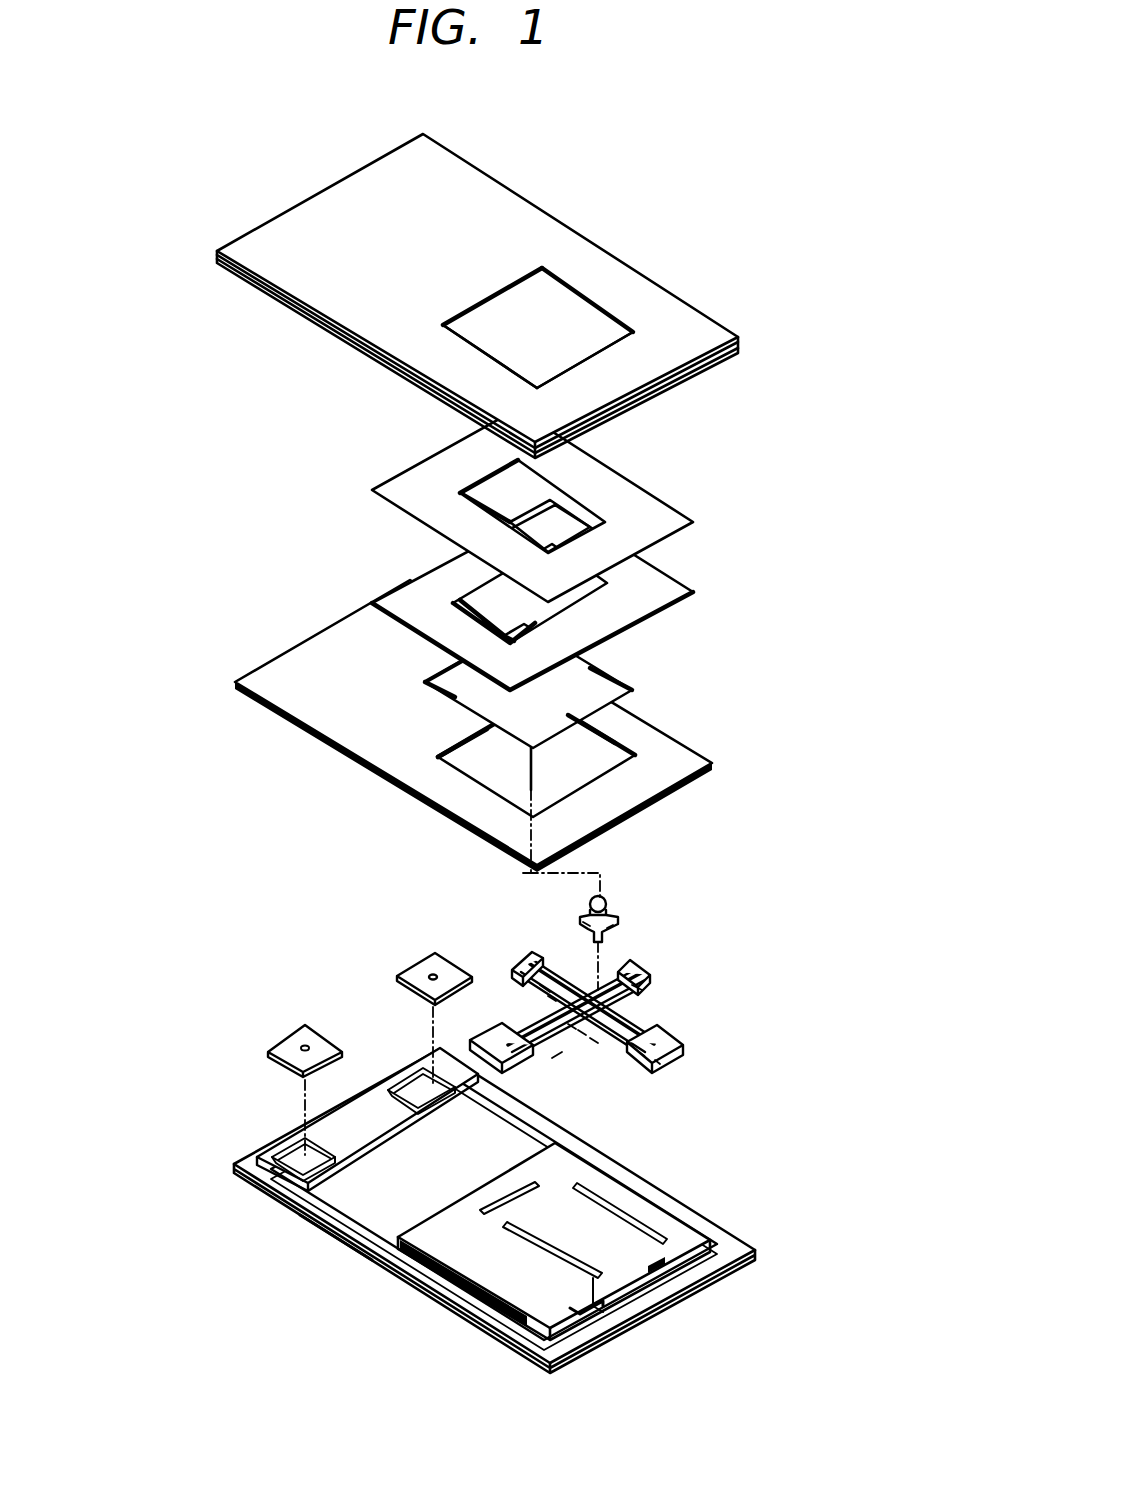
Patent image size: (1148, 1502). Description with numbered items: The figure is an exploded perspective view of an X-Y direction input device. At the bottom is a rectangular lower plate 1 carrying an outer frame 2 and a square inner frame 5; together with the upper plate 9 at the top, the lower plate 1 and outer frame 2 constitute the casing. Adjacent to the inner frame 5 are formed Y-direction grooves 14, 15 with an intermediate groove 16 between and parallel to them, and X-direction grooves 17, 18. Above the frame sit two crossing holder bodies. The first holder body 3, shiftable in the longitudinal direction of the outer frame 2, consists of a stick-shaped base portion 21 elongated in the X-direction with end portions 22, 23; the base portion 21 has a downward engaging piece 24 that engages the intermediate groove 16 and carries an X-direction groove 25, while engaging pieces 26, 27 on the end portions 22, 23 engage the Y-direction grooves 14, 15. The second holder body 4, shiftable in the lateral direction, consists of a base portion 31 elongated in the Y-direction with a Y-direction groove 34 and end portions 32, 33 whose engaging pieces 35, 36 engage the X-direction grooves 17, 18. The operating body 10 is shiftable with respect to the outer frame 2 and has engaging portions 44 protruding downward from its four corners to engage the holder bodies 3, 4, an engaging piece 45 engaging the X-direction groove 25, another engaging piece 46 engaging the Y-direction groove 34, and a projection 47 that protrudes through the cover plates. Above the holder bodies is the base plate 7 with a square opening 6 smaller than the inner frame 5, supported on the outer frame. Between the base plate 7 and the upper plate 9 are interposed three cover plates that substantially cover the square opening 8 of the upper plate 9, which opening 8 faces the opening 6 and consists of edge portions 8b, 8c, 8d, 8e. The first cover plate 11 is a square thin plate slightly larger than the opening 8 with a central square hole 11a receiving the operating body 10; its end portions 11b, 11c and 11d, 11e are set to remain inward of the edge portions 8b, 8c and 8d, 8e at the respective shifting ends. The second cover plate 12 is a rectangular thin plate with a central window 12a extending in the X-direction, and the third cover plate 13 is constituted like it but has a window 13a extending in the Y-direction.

The lower plate 1 is at (560, 1133).
The outer frame 2 is at (687, 1210).
The first holder body 3 is at (585, 1008).
The second holder body 4 is at (589, 996).
The inner frame 5 is at (713, 1223).
The opening 6 is at (493, 738).
The base plate 7 is at (703, 768).
The opening 8 is at (521, 288).
The edge portion 8b is at (600, 349).
The edge portion 8c is at (592, 296).
The edge portion 8d is at (498, 287).
The edge portion 8e is at (470, 343).
The upper plate 9 is at (477, 296).
The operating body 10 is at (583, 902).
The first cover plate 11 is at (469, 729).
The square hole 11a is at (487, 730).
The end portion 11b is at (600, 735).
The end portion 11c is at (603, 657).
The end portion 11d is at (433, 665).
The end portion 11e is at (452, 694).
The second cover plate 12 is at (519, 591).
The window 12a is at (477, 590).
The third cover plate 13 is at (514, 505).
The window 13a is at (457, 492).
The Y-direction groove 14 is at (468, 1283).
The Y-direction groove 15 is at (643, 1173).
The intermediate groove 16 is at (612, 1324).
The X-direction groove 17 is at (392, 1273).
The X-direction groove 18 is at (663, 1280).
The base portion 21 is at (582, 1030).
The end portion 22 is at (500, 1035).
The end portion 23 is at (650, 977).
The engaging piece 24 is at (592, 1035).
The X-direction groove 25 is at (570, 1027).
The engaging piece 26 is at (563, 1056).
The engaging piece 27 is at (637, 987).
The base portion 31 is at (547, 989).
The end portion 32 is at (532, 952).
The end portion 33 is at (677, 1057).
The Y-direction groove 34 is at (552, 996).
The engaging piece 35 is at (522, 973).
The engaging piece 36 is at (653, 1063).
The engaging portions 44 is at (620, 920).
The engaging piece 45 is at (583, 924).
The engaging piece 46 is at (610, 930).
The projection 47 is at (605, 898).